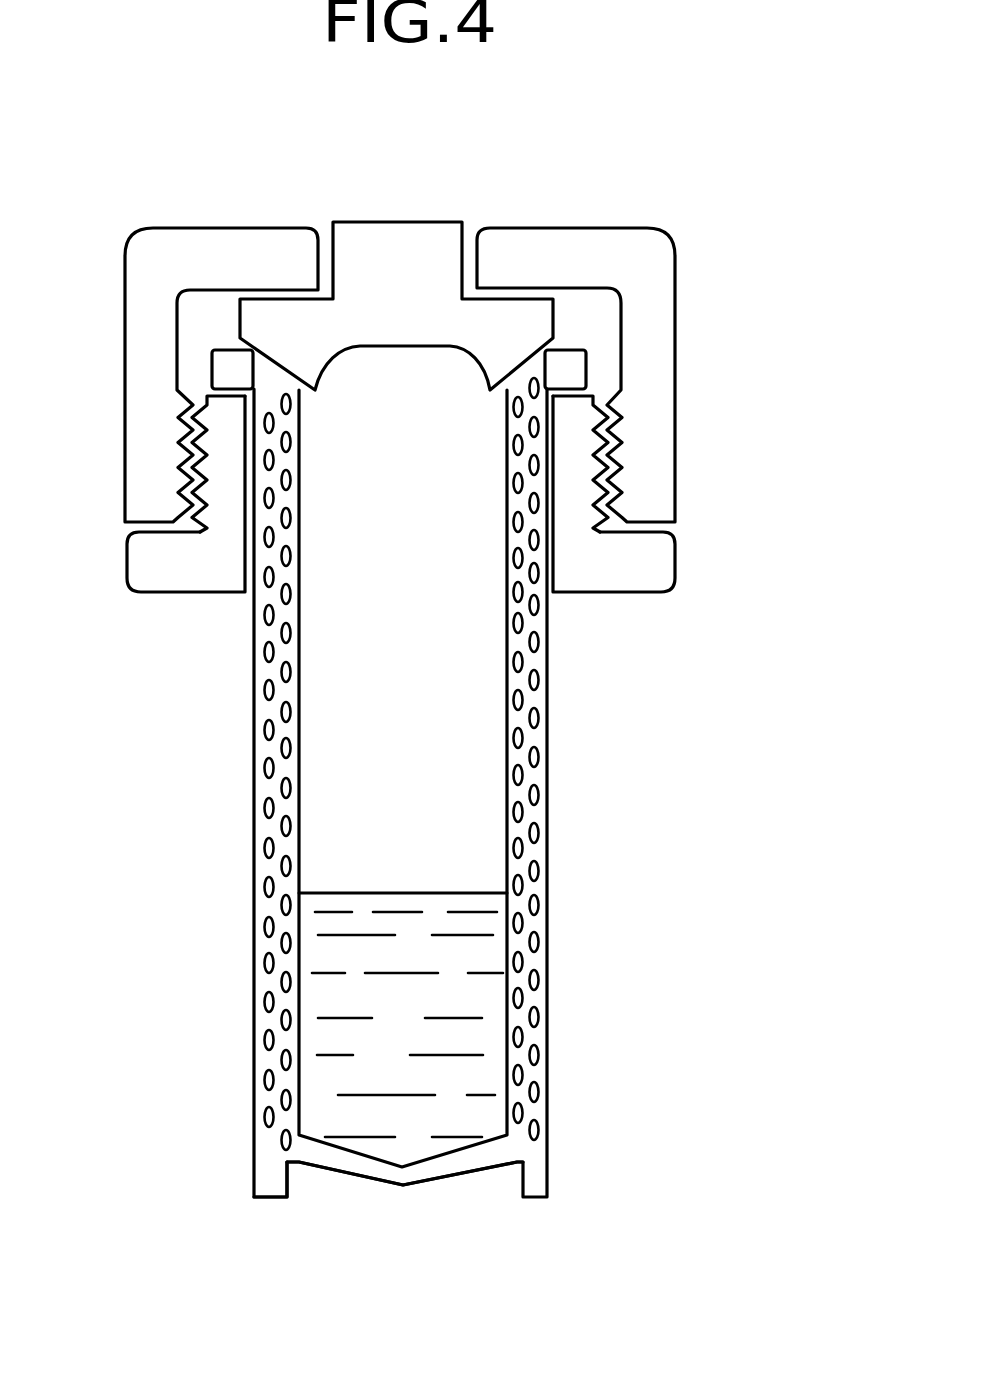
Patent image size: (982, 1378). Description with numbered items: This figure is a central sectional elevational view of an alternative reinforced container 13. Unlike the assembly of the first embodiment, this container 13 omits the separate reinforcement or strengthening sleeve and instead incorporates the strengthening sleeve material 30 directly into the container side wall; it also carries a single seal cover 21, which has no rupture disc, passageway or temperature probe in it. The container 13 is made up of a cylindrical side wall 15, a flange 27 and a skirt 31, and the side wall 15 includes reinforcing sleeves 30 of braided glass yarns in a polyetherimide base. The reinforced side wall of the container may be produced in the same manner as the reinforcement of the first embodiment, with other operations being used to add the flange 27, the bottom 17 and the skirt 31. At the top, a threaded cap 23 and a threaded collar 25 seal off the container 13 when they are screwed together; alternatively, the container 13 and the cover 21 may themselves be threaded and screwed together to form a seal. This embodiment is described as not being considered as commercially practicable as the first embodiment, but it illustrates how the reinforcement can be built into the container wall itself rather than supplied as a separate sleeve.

The seal cover 21 is at (555, 317).
The flange 27 is at (586, 363).
The threaded cap 23 is at (677, 495).
The threaded collar 25 is at (677, 578).
The container 13 is at (580, 682).
The reinforcing sleeves 30 is at (545, 827).
The cylindrical side wall 15 is at (549, 963).
The bottom 17 is at (330, 1168).
The skirt 31 is at (267, 1199).